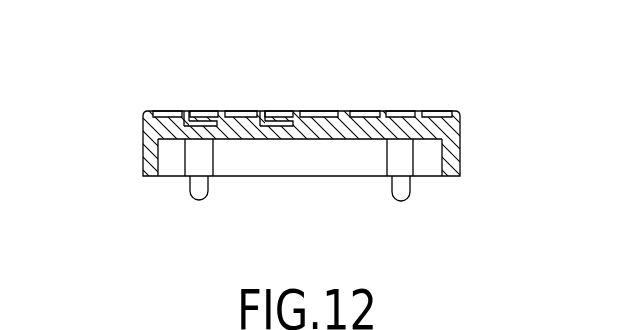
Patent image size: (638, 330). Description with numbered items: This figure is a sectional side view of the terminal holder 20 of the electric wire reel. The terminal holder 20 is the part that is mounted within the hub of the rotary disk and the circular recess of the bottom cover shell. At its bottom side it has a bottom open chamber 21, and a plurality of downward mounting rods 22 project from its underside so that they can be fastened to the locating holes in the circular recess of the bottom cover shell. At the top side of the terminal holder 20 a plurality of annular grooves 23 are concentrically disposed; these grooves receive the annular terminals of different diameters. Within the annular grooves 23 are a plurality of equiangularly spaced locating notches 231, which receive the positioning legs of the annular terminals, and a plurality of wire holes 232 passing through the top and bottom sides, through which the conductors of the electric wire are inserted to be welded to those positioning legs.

The terminal holder 20 is at (142, 133).
The bottom open chamber 21 is at (270, 165).
The downward mounting rods 22 is at (402, 185).
The annular grooves 23 is at (172, 108).
The locating notches 231 is at (187, 110).
The wire holes 232 is at (207, 108).